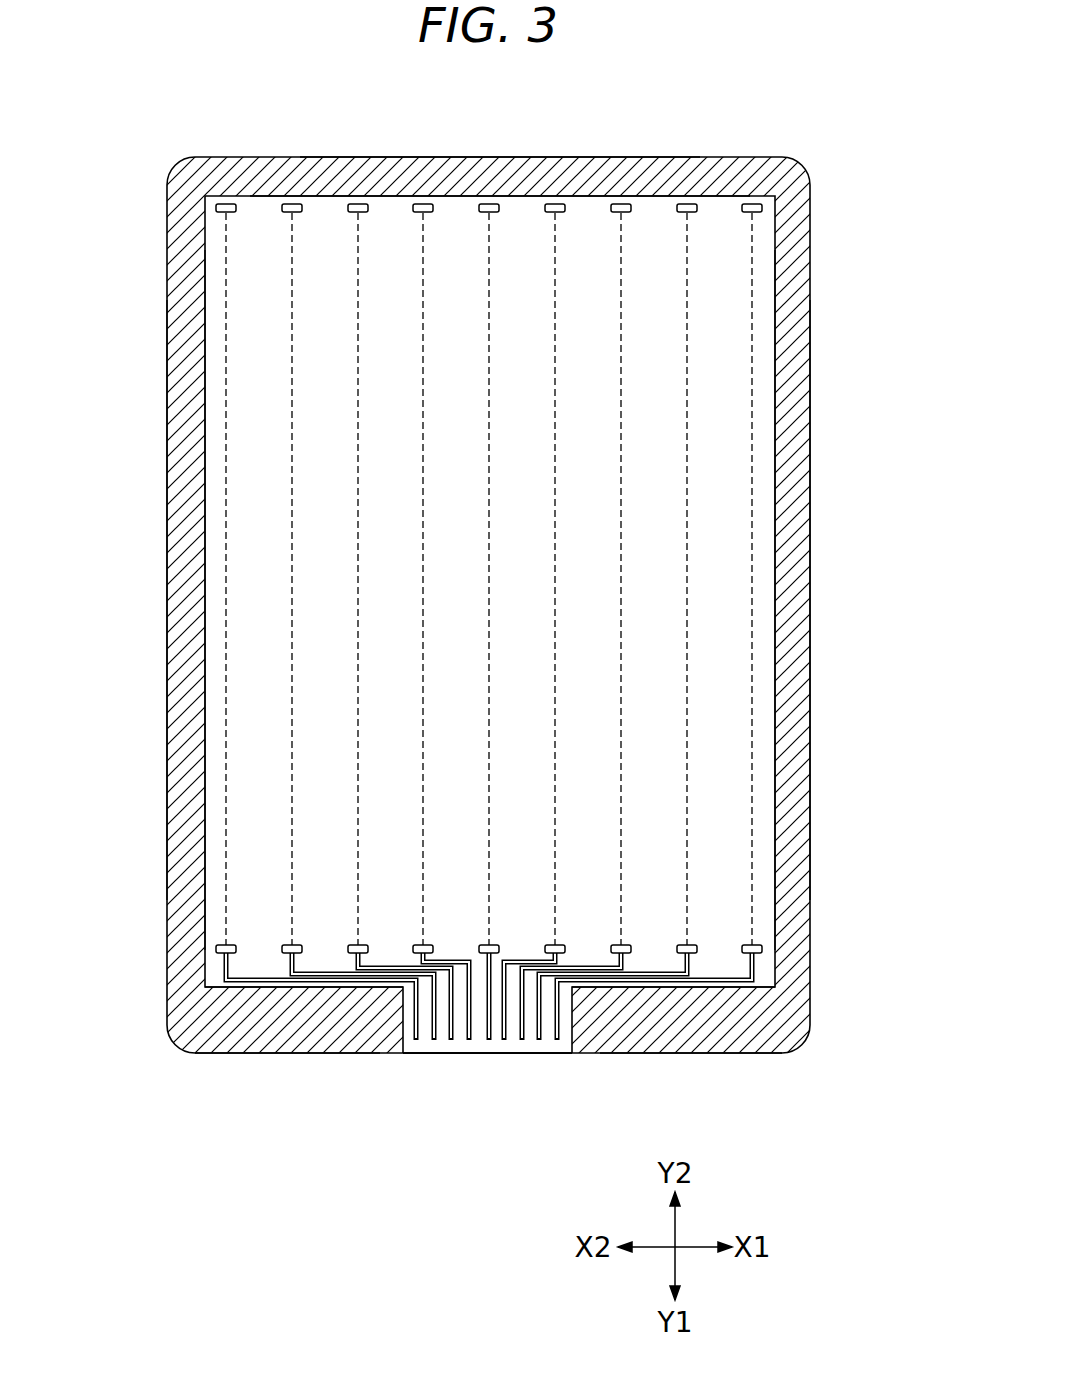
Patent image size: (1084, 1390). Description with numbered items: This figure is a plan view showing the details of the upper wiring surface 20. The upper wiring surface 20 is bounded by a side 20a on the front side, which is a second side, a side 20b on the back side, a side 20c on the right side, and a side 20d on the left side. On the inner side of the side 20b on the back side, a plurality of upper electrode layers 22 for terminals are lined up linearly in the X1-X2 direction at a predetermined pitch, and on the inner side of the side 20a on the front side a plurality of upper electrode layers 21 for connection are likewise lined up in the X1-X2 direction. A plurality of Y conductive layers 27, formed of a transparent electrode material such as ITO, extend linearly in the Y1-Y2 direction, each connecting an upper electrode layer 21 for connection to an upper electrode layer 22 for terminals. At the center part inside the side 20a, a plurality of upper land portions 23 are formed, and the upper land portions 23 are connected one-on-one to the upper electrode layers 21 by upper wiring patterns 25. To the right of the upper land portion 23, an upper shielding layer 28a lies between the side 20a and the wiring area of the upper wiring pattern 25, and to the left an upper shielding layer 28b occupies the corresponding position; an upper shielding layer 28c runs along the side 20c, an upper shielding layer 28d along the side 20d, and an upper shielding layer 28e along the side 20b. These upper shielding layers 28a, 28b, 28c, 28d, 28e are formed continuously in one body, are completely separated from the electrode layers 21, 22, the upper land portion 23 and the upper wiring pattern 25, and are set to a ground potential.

The upper wiring surface 20 is at (836, 188).
The side on the front side 20a is at (362, 1054).
The side on the back side 20b is at (523, 157).
The side on the right side 20c is at (810, 497).
The side on the left side 20d is at (167, 545).
The upper electrode layer for connection 21 is at (282, 944).
The upper electrode layer for terminals 22 is at (240, 206).
The upper land portion 23 is at (465, 1054).
The upper wiring pattern 25 is at (326, 970).
The Y conductive layer 27 is at (622, 352).
The upper shielding layer 28a is at (710, 1054).
The upper shielding layer 28b is at (218, 1054).
The upper shielding layer 28c is at (800, 604).
The upper shielding layer 28d is at (178, 676).
The upper shielding layer 28e is at (598, 163).